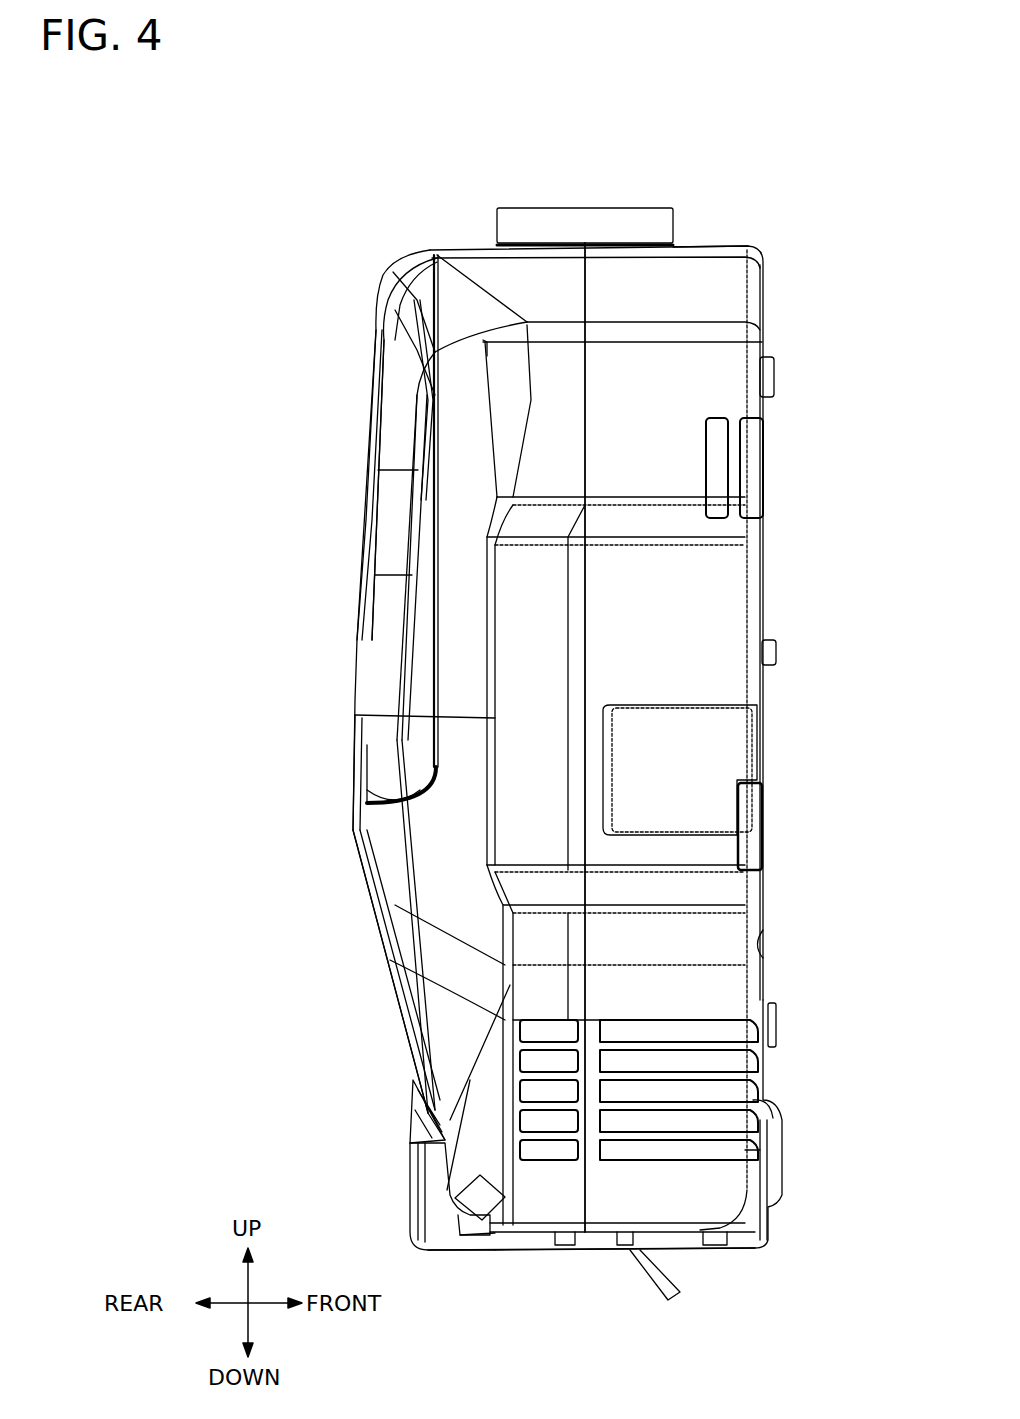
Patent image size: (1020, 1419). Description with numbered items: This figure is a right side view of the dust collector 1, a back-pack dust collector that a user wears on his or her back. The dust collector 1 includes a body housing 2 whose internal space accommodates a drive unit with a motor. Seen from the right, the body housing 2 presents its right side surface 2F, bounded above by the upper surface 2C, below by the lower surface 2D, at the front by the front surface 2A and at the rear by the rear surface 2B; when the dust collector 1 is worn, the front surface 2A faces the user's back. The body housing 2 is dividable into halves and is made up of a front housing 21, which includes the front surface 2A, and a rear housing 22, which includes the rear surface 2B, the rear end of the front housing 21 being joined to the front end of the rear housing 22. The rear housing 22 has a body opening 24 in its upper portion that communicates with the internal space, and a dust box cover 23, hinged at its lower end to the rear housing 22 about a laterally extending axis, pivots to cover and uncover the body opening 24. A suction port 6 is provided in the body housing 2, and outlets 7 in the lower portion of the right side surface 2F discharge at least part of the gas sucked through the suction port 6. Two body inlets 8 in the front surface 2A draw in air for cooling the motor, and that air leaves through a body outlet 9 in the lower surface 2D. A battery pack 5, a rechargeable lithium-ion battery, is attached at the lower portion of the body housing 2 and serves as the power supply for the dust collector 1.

The dust collector 1 is at (806, 214).
The body housing 2 is at (468, 247).
The suction port 6 is at (586, 208).
The upper surface 2C is at (706, 246).
The body opening 24 is at (433, 468).
The dust box cover 23 is at (366, 526).
The right side surface 2F is at (510, 630).
The front surface 2A is at (763, 722).
The rear surface 2B is at (353, 788).
The body inlets 8 is at (740, 828).
The rear housing 22 is at (366, 883).
The front housing 21 is at (763, 890).
The battery pack 5 is at (427, 1232).
The outlets 7 is at (630, 1120).
The lower surface 2D is at (660, 1240).
The body outlet 9 is at (700, 1240).